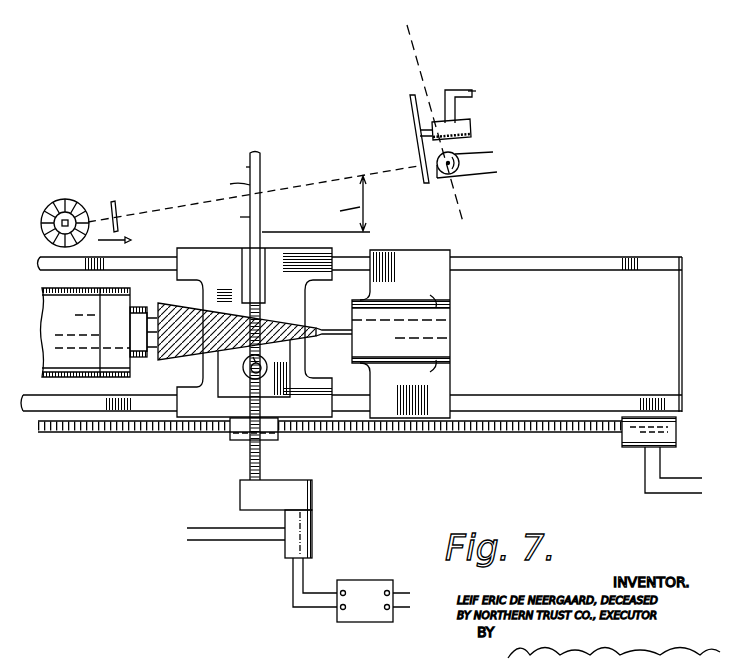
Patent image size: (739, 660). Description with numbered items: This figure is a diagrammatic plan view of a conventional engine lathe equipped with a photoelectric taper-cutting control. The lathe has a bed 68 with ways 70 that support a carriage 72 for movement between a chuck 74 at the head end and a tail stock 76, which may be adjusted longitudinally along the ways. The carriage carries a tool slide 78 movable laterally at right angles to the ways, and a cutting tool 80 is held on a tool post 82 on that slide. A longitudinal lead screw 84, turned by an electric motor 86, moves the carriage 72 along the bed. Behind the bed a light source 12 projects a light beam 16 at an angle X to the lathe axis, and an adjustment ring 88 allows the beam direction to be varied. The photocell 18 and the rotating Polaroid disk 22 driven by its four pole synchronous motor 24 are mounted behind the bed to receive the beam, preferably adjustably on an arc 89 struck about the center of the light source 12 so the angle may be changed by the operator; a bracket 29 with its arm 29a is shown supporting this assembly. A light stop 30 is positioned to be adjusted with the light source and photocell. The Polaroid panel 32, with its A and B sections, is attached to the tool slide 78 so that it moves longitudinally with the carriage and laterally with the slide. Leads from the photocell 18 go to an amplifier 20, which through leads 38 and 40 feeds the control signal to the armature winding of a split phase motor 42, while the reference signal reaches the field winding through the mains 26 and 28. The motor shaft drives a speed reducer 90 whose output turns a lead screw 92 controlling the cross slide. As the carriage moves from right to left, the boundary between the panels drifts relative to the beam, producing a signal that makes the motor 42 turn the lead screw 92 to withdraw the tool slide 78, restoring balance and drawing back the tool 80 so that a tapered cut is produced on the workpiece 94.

The light source 12 is at (68, 220).
The light beam 16 is at (169, 203).
The photocell 18 is at (460, 158).
The amplifier 20 is at (375, 583).
The rotating Polaroid disk 22 is at (410, 107).
The four pole synchronous motor 24 is at (465, 130).
The mains 26 is at (222, 525).
The mains 28 is at (213, 542).
The bracket 29 is at (458, 86).
The bracket arm 29a is at (472, 93).
The light stop 30 is at (115, 203).
The Polaroid panel 32 is at (267, 179).
The lead 38 is at (313, 590).
The lead 40 is at (312, 608).
The split phase motor 42 is at (310, 532).
The bed 68 is at (673, 305).
The ways 70 is at (570, 263).
The carriage 72 is at (218, 262).
The chuck 74 is at (120, 300).
The tail stock 76 is at (425, 262).
The tool slide 78 is at (282, 370).
The cutting tool 80 is at (253, 357).
The tool post 82 is at (243, 377).
The longitudinal lead screw 84 is at (402, 433).
The electric motor 86 is at (675, 433).
The adjustment ring 88 is at (56, 206).
The arc 89 is at (418, 43).
The speed reducer 90 is at (283, 488).
The lead screw 92 is at (250, 458).
The workpiece 94 is at (168, 362).